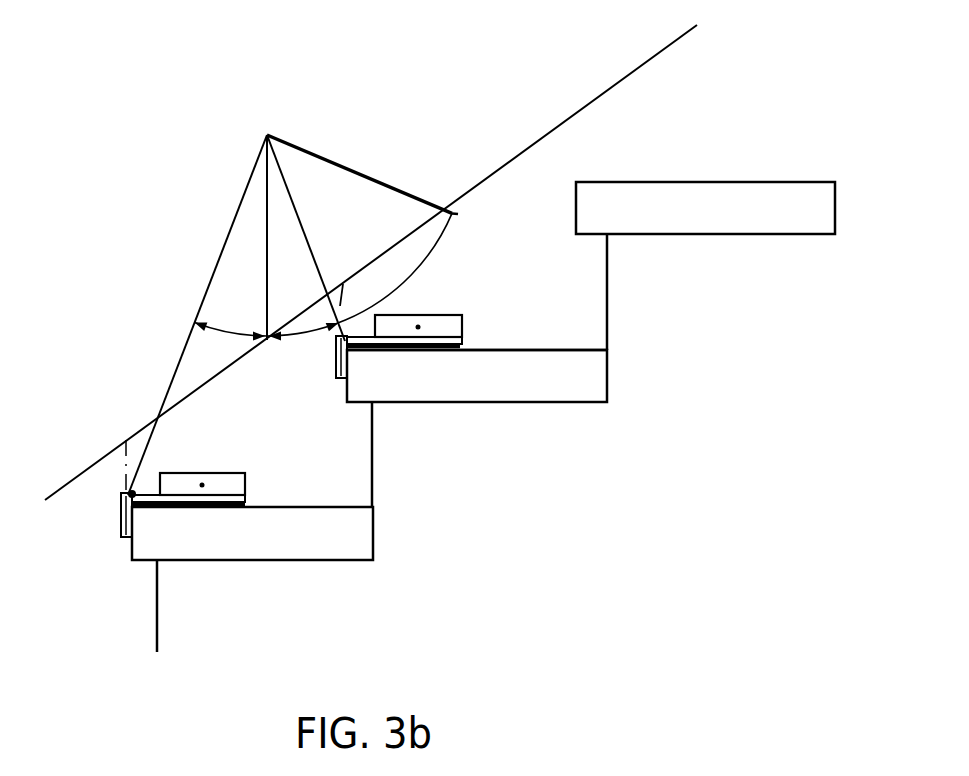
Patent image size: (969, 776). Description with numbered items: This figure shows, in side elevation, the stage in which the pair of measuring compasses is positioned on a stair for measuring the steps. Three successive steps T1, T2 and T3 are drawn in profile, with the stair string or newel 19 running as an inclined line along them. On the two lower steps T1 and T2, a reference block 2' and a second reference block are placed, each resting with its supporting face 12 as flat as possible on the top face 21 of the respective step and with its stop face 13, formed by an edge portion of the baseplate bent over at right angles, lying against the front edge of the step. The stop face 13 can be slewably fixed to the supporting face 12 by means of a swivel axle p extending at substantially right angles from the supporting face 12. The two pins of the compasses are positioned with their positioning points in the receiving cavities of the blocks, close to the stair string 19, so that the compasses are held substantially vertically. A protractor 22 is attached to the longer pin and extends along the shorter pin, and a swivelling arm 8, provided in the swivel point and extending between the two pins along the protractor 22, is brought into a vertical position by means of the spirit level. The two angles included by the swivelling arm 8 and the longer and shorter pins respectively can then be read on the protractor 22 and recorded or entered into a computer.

The swivelling arm 8 is at (263, 207).
The stair string or newel 19 is at (562, 125).
The protractor 22 is at (323, 157).
The top face of the step 21 is at (518, 348).
The reference block 2' is at (195, 442).
The supporting face 12 is at (452, 352).
The stop face 13 is at (348, 373).
The swivel axle p is at (130, 497).
The step T1 is at (315, 543).
The step T2 is at (566, 382).
The step T3 is at (802, 218).